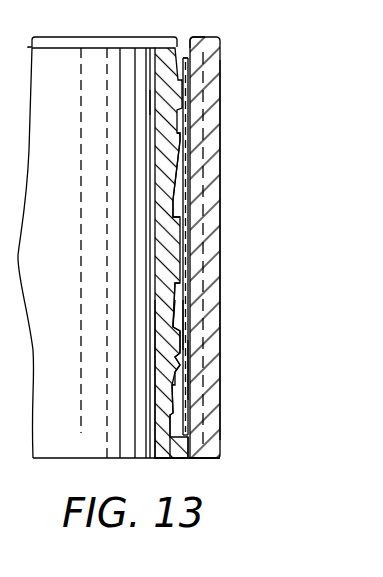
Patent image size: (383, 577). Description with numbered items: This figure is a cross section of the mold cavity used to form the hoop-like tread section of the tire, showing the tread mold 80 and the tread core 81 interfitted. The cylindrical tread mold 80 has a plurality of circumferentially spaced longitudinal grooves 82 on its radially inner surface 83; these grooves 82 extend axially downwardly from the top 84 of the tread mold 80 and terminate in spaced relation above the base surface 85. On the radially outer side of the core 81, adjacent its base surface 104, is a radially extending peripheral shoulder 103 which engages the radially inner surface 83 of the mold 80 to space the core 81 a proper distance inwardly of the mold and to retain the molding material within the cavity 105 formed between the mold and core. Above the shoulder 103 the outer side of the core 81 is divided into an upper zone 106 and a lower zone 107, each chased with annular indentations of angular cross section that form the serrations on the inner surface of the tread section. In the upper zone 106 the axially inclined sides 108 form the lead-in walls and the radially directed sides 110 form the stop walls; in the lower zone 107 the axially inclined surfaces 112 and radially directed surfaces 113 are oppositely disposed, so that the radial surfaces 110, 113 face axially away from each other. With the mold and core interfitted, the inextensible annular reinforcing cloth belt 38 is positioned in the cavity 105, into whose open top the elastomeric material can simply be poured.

The inextensible annular reinforcing cloth belt 38 is at (187, 72).
The tread mold 80 is at (223, 221).
The tread core 81 is at (154, 103).
The longitudinal grooves 82 is at (208, 142).
The radially inner surface 83 is at (186, 44).
The top 84 is at (143, 37).
The base surface 85 is at (195, 459).
The peripheral shoulder 103 is at (190, 449).
The base surface 104 is at (120, 459).
The cavity 105 is at (170, 299).
The upper zone 106 is at (170, 156).
The lower zone 107 is at (158, 353).
The axially inclined sides 108 is at (180, 194).
The radially directed sides 110 is at (178, 123).
The axially inclined surfaces 112 is at (183, 333).
The radially directed surfaces 113 is at (182, 368).